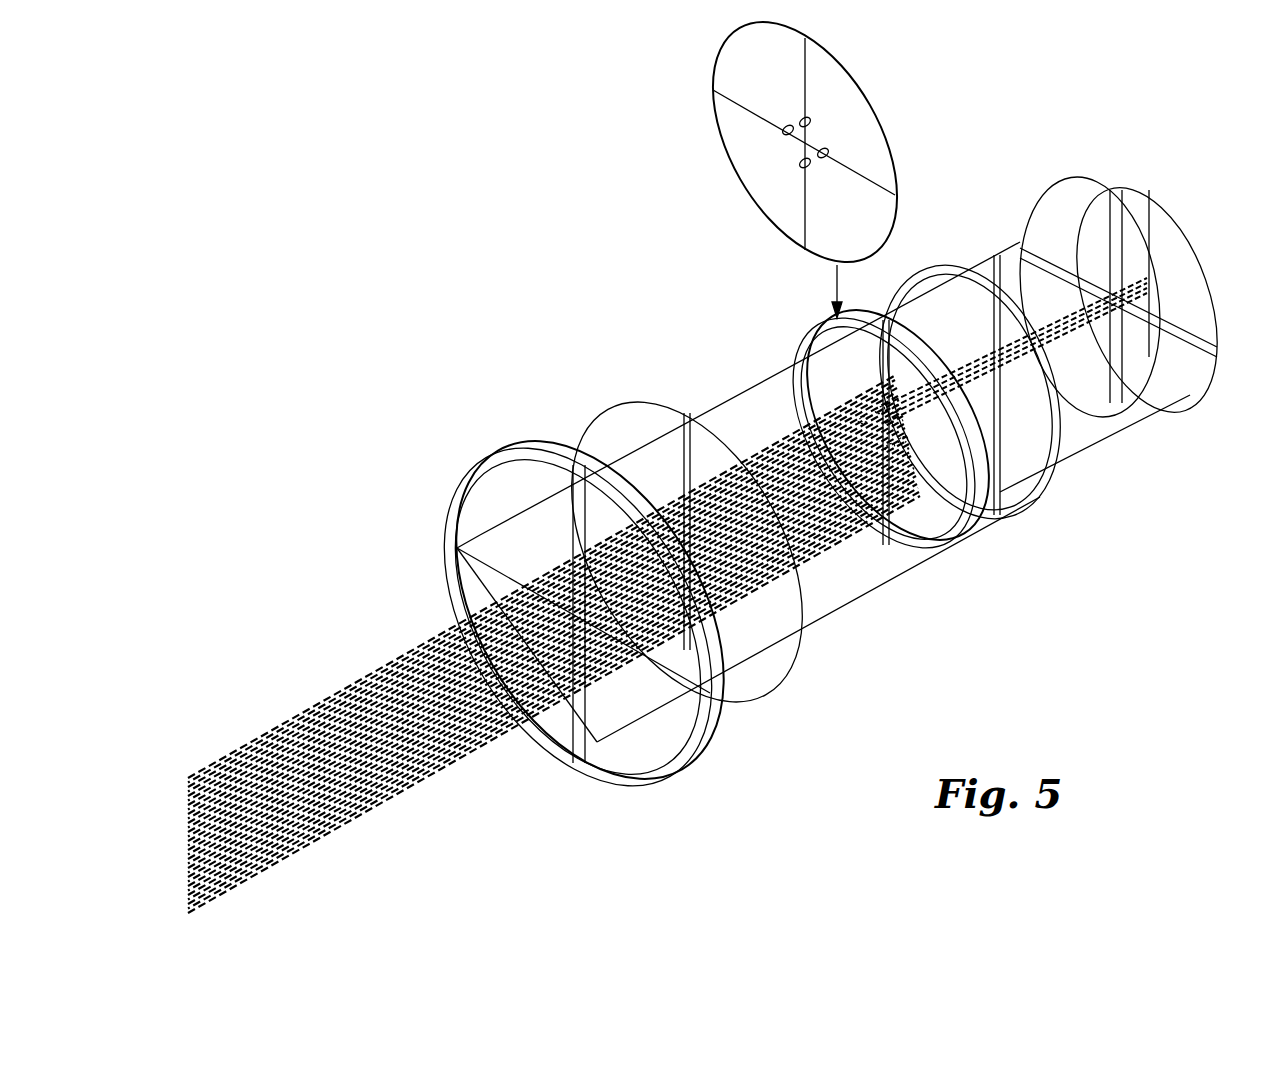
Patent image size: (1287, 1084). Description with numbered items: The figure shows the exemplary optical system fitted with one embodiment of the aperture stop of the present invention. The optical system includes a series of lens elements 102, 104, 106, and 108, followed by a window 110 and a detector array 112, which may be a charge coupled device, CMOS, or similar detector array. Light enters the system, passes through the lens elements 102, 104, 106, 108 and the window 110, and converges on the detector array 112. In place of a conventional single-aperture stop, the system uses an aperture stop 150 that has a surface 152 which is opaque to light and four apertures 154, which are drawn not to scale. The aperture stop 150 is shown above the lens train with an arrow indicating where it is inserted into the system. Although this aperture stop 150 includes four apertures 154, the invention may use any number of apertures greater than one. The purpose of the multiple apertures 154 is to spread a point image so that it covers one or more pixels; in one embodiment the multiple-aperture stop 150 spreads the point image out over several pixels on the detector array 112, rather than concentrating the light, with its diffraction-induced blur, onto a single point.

The lens element 102 is at (732, 710).
The lens element 104 is at (900, 595).
The lens element 106 is at (1028, 482).
The lens element 108 is at (1098, 440).
The window 110 is at (1190, 405).
The detector array 112 is at (1185, 238).
The aperture stop 150 is at (688, 100).
The surface 152 is at (745, 152).
The apertures 154 is at (805, 165).